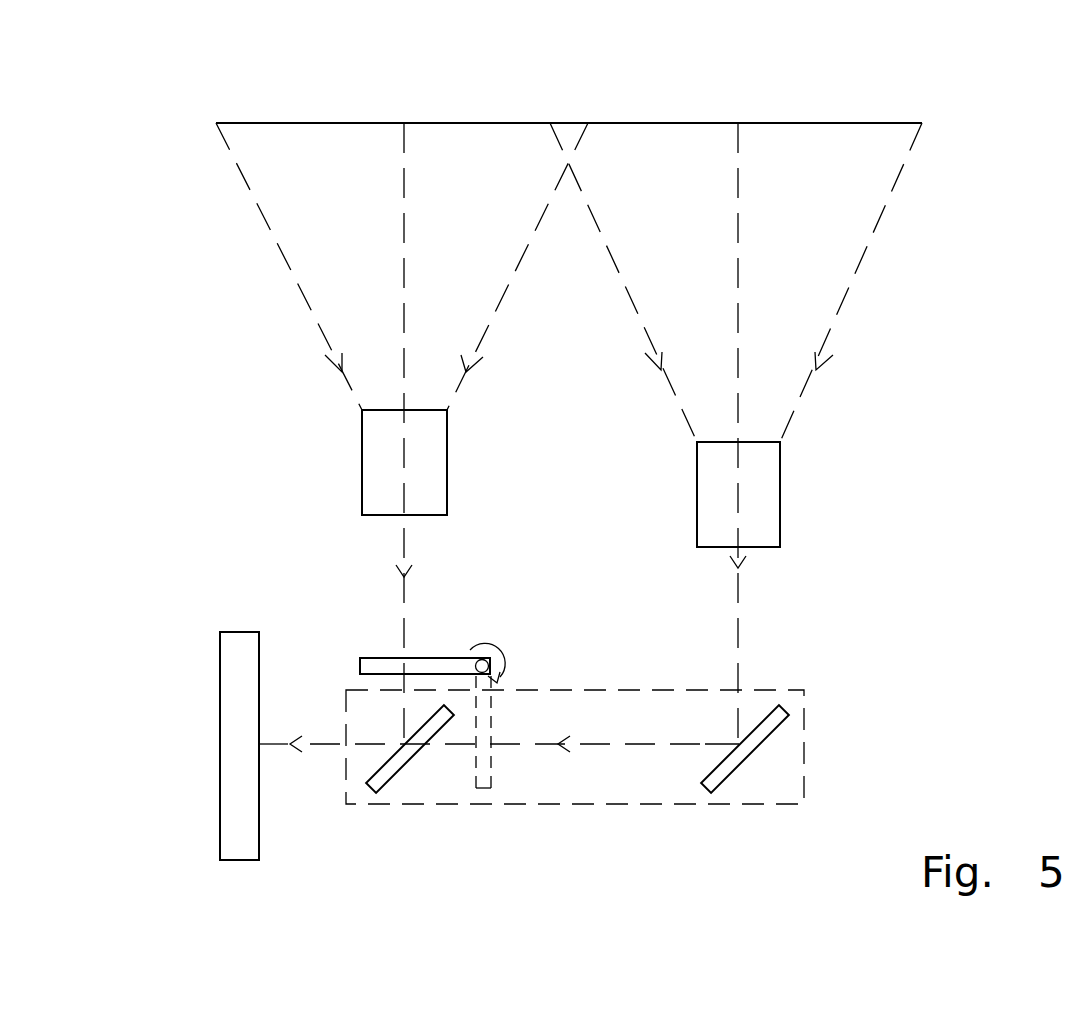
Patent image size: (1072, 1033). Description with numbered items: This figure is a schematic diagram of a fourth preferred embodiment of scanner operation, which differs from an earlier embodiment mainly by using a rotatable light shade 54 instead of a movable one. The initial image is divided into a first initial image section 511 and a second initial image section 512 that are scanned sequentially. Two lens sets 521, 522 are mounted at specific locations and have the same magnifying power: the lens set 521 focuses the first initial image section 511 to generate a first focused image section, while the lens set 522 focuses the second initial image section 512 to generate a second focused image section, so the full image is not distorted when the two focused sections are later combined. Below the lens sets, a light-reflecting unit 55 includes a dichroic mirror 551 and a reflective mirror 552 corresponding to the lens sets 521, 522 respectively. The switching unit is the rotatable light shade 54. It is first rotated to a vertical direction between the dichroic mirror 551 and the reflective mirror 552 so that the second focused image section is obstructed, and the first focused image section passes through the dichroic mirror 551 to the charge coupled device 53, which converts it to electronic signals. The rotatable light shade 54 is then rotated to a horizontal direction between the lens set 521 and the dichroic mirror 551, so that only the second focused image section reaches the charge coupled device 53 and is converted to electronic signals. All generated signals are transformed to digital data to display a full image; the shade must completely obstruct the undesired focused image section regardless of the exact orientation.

The first initial image section 511 is at (325, 123).
The second initial image section 512 is at (815, 123).
The lens set 521 is at (385, 487).
The lens set 522 is at (760, 483).
The charge coupled device 53 is at (235, 718).
The rotatable light shade 54 is at (430, 663).
The light-reflecting unit 55 is at (597, 781).
The dichroic mirror 551 is at (385, 780).
The reflective mirror 552 is at (720, 773).